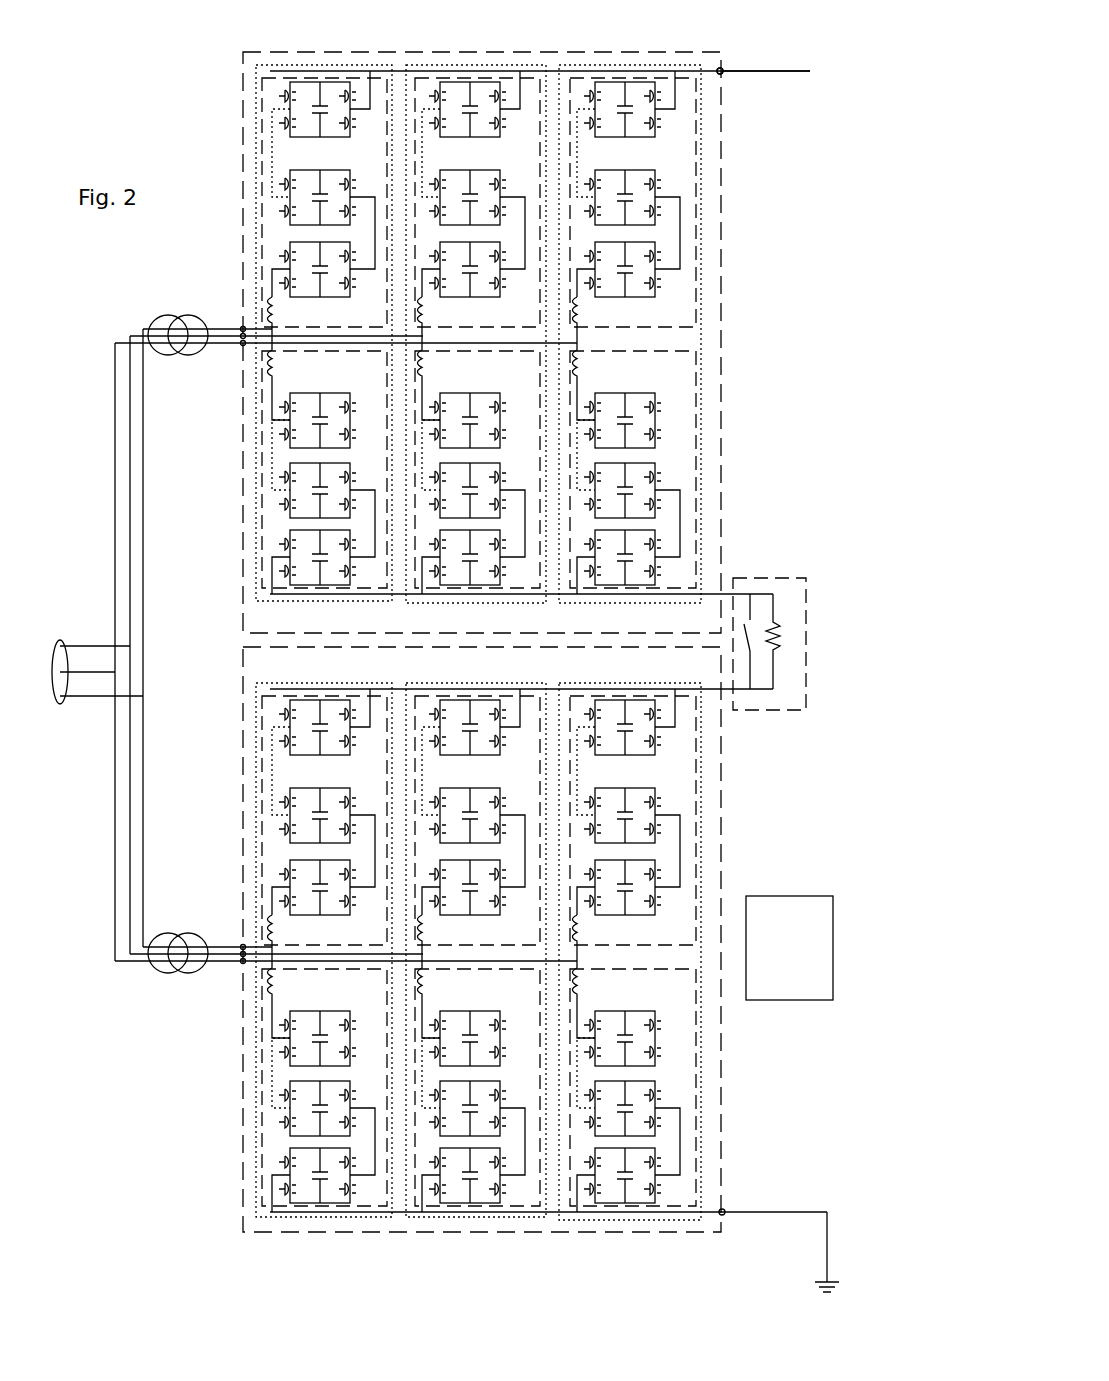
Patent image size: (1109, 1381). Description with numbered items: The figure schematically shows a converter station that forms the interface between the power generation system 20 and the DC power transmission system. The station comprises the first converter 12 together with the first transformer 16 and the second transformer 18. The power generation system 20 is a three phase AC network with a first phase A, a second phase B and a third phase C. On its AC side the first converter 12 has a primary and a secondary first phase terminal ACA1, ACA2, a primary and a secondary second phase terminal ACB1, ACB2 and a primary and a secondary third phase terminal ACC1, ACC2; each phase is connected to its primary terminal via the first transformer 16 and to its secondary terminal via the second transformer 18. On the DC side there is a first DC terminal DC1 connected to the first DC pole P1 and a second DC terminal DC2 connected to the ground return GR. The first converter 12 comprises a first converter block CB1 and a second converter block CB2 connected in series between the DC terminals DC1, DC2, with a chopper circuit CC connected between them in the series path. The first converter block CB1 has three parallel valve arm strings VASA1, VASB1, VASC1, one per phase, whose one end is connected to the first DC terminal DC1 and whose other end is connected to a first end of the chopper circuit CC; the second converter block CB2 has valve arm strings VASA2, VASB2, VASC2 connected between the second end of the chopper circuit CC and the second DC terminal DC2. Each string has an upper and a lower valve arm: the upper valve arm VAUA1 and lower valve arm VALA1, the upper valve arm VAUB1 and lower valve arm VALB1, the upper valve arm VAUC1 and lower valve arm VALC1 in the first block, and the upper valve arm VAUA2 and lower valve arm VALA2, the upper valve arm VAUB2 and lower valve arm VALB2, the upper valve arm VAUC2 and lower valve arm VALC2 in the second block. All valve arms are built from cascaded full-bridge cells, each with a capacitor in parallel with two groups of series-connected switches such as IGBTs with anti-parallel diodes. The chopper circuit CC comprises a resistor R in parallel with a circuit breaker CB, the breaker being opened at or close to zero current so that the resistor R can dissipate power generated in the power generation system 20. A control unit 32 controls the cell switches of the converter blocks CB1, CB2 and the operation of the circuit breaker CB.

The first converter 12 is at (213, 173).
The first transformer 16 is at (158, 320).
The second transformer 18 is at (160, 970).
The power generation system 20 is at (62, 640).
The control unit 32 is at (789, 948).
The first phase A is at (97, 644).
The second phase B is at (82, 670).
The third phase C is at (95, 698).
The first valve arm string VASA1 is at (318, 64).
The second valve arm string VASB1 is at (475, 64).
The third valve arm string VASC1 is at (620, 64).
The first valve arm string VASA2 is at (303, 1219).
The second valve arm string VASB2 is at (450, 1219).
The third valve arm string VASC2 is at (620, 1221).
The upper valve arm VAUA1 is at (370, 323).
The lower valve arm VALA1 is at (366, 377).
The upper valve arm VAUB1 is at (510, 323).
The lower valve arm VALB1 is at (514, 377).
The upper valve arm VAUC1 is at (678, 323).
The lower valve arm VALC1 is at (676, 377).
The upper valve arm VAUA2 is at (370, 941).
The lower valve arm VALA2 is at (366, 995).
The upper valve arm VAUB2 is at (510, 941).
The lower valve arm VALB2 is at (514, 995).
The upper valve arm VAUC2 is at (678, 941).
The lower valve arm VALC2 is at (676, 995).
The primary first phase terminal ACA1 is at (243, 327).
The primary second phase terminal ACB1 is at (243, 334).
The primary third phase terminal ACC1 is at (243, 345).
The secondary first phase terminal ACA2 is at (243, 945).
The secondary second phase terminal ACB2 is at (243, 952).
The secondary third phase terminal ACC2 is at (243, 963).
The first DC terminal DC1 is at (722, 68).
The second DC terminal DC2 is at (724, 1209).
The first DC pole P1 is at (781, 72).
The ground return GR is at (832, 1242).
The first converter block CB1 is at (724, 342).
The second converter block CB2 is at (724, 814).
The circuit breaker CB is at (752, 618).
The resistor R is at (783, 641).
The chopper circuit CC is at (788, 647).